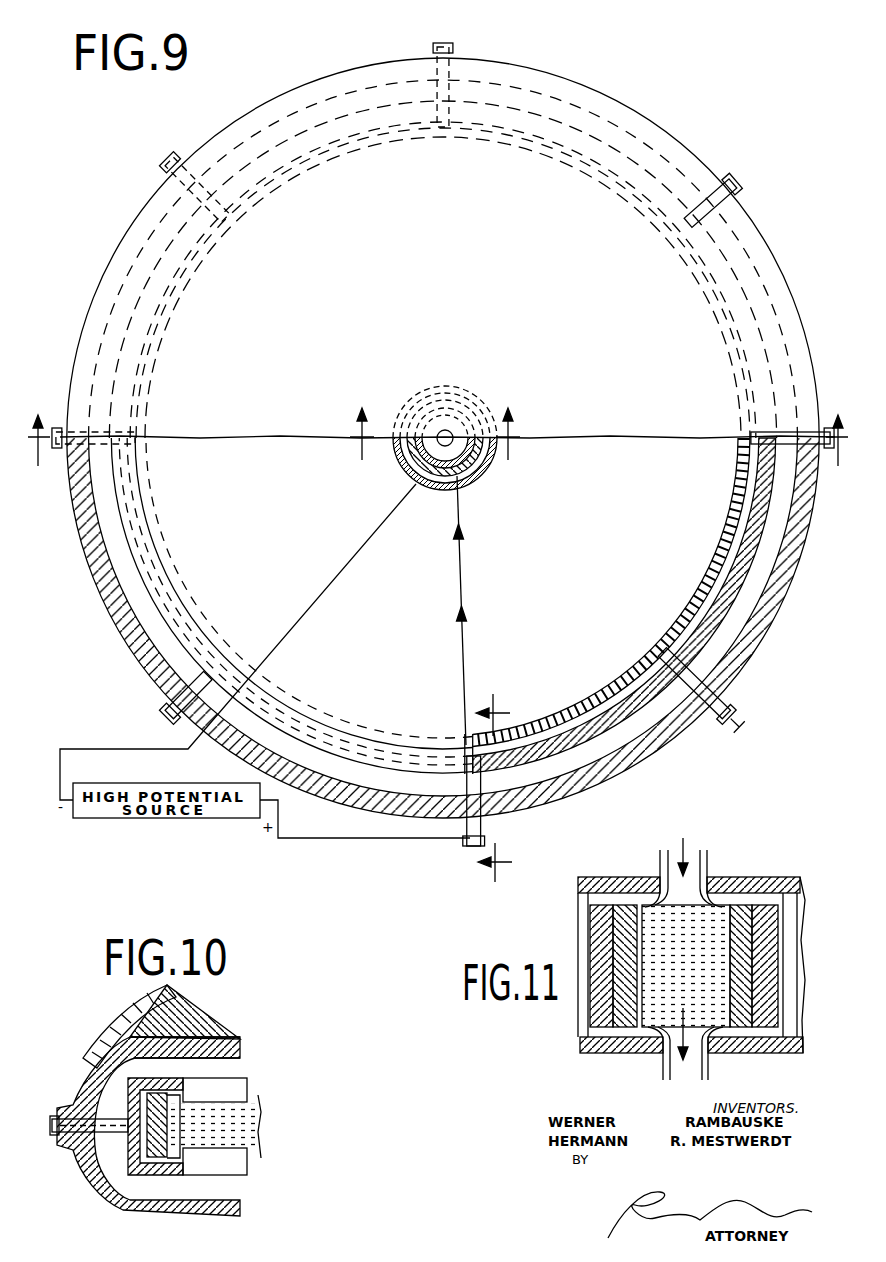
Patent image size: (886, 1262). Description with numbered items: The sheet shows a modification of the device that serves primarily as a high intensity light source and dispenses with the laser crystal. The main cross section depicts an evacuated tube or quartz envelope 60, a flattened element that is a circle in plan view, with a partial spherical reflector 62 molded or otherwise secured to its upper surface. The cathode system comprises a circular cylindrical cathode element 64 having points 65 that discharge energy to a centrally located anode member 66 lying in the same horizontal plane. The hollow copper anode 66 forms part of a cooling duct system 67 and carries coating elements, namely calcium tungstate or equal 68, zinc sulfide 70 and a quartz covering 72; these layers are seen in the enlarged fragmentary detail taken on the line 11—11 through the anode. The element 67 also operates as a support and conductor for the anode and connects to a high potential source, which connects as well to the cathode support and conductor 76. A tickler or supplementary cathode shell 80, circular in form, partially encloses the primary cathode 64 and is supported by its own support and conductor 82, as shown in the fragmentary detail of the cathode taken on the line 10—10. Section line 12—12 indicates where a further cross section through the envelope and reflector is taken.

In FIG. 9, the evacuated tube or quartz envelope 60 is at (122, 630).
In FIG. 10, the evacuated tube or quartz envelope 60 is at (243, 1041).
In FIG. 9, the partial spherical reflector 62 is at (548, 214).
In FIG. 10, the partial spherical reflector 62 is at (132, 1004).
In FIG. 10, the circular cylindrical cathode element 64 is at (178, 1136).
In FIG. 10, the points 65 is at (254, 1130).
In FIG. 9, the anode member 66 is at (460, 425).
In FIG. 11, the anode member 66 is at (722, 908).
In FIG. 9, the cooling duct system 67 is at (448, 432).
In FIG. 11, the cooling duct system 67 is at (694, 858).
In FIG. 9, the calcium tungstate coating 68 is at (484, 476).
In FIG. 11, the calcium tungstate coating 68 is at (620, 910).
In FIG. 9, the zinc sulfide coating 70 is at (424, 482).
In FIG. 11, the zinc sulfide coating 70 is at (765, 912).
In FIG. 9, the quartz covering 72 is at (470, 488).
In FIG. 11, the quartz covering 72 is at (800, 908).
In FIG. 9, the cathode support and conductor 76 is at (450, 85).
In FIG. 10, the supplementary cathode shell 80 is at (122, 1190).
In FIG. 9, the support and conductor 82 is at (752, 200).
In FIG. 10, the support and conductor 82 is at (106, 1142).
In FIG. 9, the section line 10- 10 is at (506, 788).
In FIG. 9, the section line 11- 11 is at (431, 446).
In FIG. 9, the section line 12- 12 is at (437, 432).